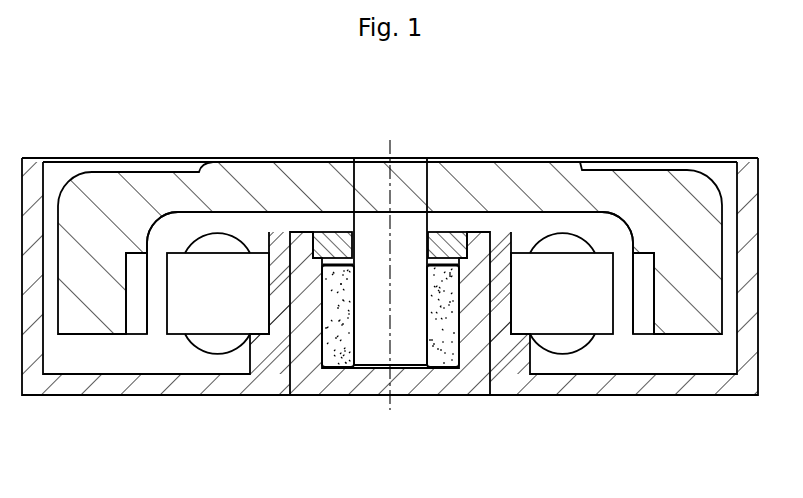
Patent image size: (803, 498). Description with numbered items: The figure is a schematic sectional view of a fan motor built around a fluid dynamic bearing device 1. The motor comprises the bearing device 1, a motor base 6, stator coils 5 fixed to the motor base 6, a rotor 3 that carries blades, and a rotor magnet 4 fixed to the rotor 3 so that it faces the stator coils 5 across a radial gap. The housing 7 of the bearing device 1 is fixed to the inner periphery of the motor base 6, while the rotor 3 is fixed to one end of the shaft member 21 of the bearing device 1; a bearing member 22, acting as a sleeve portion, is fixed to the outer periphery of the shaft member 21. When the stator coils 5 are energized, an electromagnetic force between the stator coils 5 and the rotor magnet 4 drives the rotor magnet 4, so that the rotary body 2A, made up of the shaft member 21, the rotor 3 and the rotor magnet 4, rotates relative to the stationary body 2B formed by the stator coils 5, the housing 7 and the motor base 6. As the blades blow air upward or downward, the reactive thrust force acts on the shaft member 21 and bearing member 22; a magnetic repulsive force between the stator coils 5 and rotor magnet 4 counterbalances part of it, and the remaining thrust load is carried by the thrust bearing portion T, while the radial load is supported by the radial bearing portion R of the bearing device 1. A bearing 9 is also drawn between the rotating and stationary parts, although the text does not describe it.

The fluid dynamic bearing device 1 is at (471, 220).
The rotary body 2A is at (411, 156).
The stationary body 2B is at (301, 398).
The rotor 3 is at (638, 185).
The rotor magnet 4 is at (643, 324).
The stator coils 5 is at (603, 325).
The motor base 6 is at (518, 380).
The housing 7 is at (456, 392).
The bearing 9 is at (335, 243).
The shaft member 21 is at (377, 180).
The bearing member 22 is at (440, 340).
The radial bearing portion R is at (316, 286).
The thrust bearing portion T is at (341, 372).